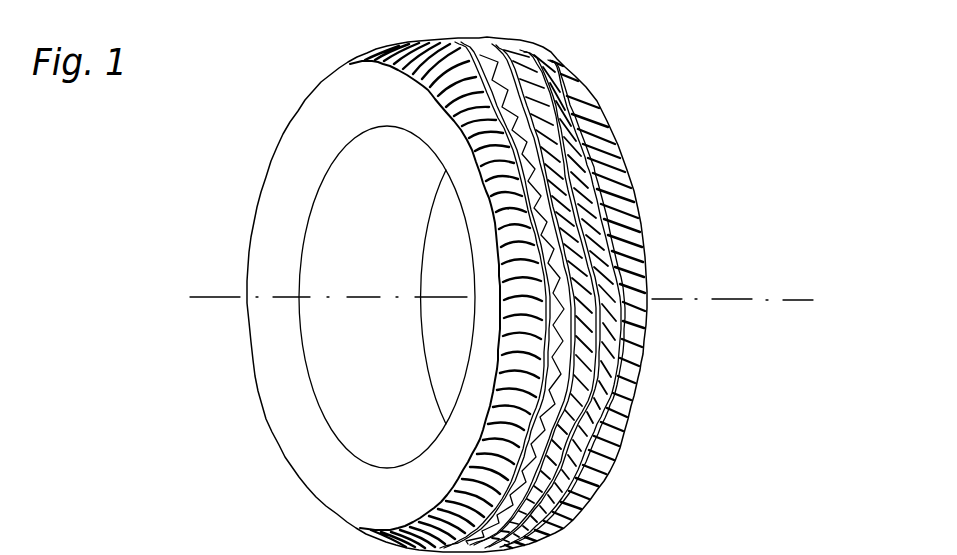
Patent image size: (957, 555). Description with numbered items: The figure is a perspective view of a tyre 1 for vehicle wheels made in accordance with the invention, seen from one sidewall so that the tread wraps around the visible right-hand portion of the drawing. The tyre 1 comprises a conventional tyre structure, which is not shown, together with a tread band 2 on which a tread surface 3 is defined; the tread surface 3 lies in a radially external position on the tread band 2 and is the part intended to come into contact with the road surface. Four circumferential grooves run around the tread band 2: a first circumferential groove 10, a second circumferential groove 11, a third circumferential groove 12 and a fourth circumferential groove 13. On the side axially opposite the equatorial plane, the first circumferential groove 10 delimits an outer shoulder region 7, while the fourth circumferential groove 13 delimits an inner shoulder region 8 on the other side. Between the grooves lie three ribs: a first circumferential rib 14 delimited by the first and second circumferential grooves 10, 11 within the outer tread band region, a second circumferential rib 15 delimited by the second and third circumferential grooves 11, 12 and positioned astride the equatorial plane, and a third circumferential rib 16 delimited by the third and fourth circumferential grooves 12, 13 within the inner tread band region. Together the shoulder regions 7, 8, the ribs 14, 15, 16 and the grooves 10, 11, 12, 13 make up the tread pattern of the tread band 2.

The tyre 1 is at (465, 276).
The tread band 2 is at (539, 274).
The tread surface 3 is at (585, 157).
The outer shoulder region 7 is at (470, 105).
The inner shoulder region 8 is at (627, 222).
The first circumferential groove 10 is at (528, 295).
The second circumferential groove 11 is at (555, 395).
The third circumferential groove 12 is at (585, 391).
The fourth circumferential groove 13 is at (612, 370).
The first circumferential rib 14 is at (475, 65).
The second circumferential rib 15 is at (495, 62).
The third circumferential rib 16 is at (528, 67).